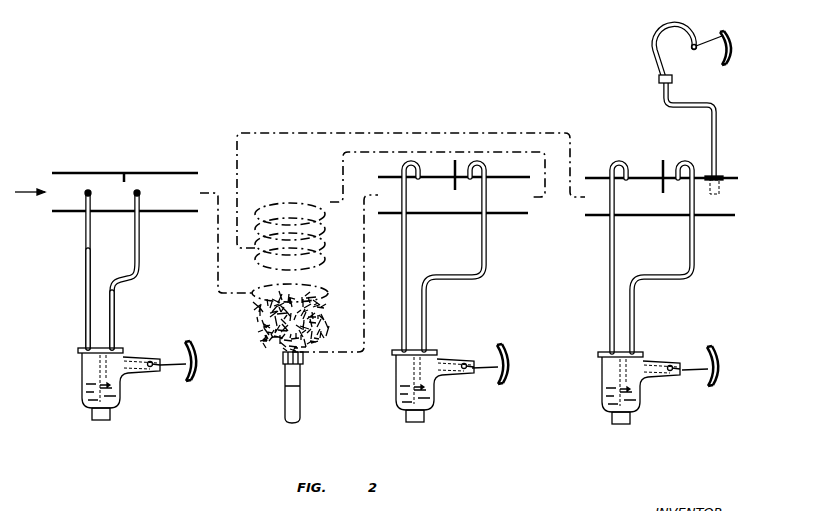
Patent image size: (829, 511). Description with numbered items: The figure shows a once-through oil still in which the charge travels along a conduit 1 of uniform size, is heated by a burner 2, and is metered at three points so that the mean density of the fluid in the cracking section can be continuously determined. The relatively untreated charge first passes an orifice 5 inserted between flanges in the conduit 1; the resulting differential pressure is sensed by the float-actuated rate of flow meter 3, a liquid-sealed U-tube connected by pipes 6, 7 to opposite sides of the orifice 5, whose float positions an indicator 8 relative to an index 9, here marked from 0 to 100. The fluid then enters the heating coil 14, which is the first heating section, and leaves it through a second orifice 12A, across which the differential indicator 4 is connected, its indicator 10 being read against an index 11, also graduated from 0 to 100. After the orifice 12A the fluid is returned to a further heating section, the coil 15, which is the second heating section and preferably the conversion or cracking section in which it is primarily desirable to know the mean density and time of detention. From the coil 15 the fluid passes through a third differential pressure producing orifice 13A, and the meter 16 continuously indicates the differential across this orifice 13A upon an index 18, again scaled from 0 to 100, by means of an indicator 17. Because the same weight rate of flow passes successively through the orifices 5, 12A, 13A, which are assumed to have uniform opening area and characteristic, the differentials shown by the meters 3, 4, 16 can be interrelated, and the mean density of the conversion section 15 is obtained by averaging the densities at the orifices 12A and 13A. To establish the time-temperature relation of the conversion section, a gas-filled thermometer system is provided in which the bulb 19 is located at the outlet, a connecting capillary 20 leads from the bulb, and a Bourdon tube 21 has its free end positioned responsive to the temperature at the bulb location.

The conduit 1 is at (86, 208).
The burner 2 is at (300, 392).
The rate of flow meter 3 is at (82, 380).
The differential indicator 4 is at (433, 386).
The orifice 5 is at (130, 205).
The pipe 6 is at (86, 292).
The pipe 7 is at (116, 292).
The indicator 8 is at (164, 360).
The index 9 is at (196, 362).
The indicator 10 is at (478, 356).
The index 11 is at (508, 367).
The orifice 12A is at (455, 170).
The third differential pressure producing orifice 13A is at (663, 190).
The heating coil 14 is at (326, 300).
The coil 15 is at (322, 232).
The meter 16 is at (639, 388).
The indicator 17 is at (686, 359).
The index 18 is at (716, 369).
The bulb 19 is at (722, 190).
The connecting capillary 20 is at (718, 118).
The Bourdon tube 21 is at (653, 62).
The scale zero mark 0 is at (724, 347).
The scale hundred mark 100 is at (731, 390).